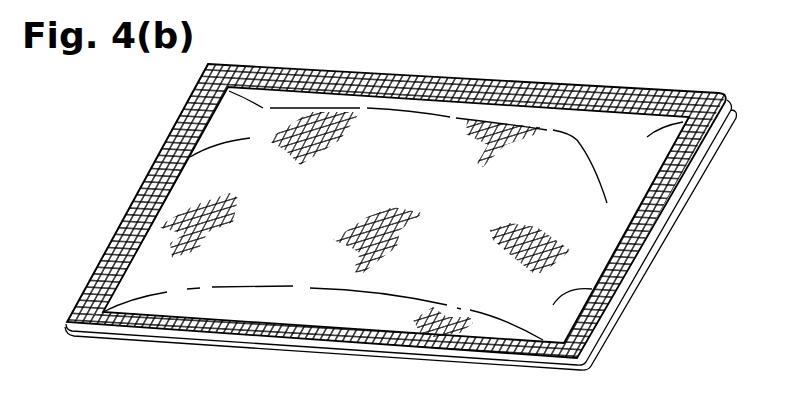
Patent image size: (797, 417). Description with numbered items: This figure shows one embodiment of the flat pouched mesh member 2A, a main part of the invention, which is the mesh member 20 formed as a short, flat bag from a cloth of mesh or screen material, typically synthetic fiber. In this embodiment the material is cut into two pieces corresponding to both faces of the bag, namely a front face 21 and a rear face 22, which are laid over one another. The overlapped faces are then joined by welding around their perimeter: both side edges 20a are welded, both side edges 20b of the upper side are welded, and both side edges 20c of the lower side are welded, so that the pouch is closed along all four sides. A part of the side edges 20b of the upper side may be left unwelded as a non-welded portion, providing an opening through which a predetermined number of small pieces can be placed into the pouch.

The mesh member 2A is at (601, 80).
The mesh member 20 is at (698, 308).
The side edges 20a is at (143, 180).
The side edges of the upper side 20b is at (281, 70).
The side edges of the lower side 20c is at (148, 332).
The front face 21 is at (613, 302).
The rear face 22 is at (537, 363).